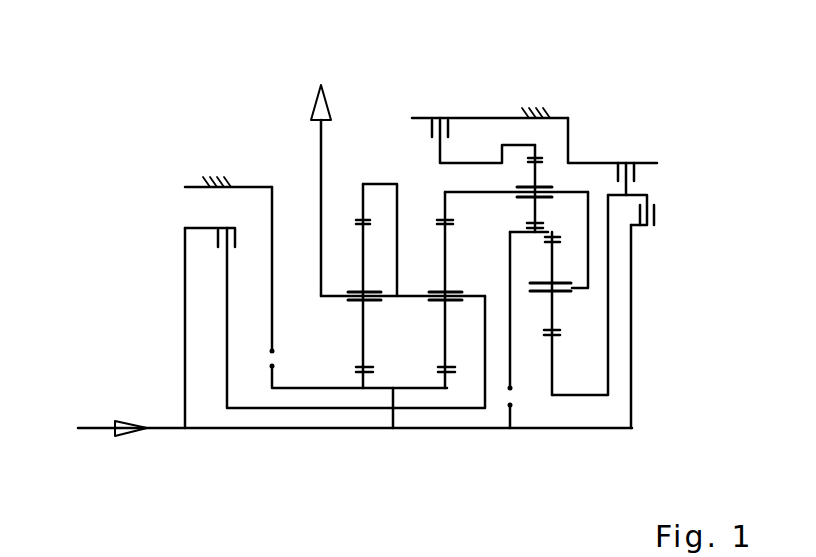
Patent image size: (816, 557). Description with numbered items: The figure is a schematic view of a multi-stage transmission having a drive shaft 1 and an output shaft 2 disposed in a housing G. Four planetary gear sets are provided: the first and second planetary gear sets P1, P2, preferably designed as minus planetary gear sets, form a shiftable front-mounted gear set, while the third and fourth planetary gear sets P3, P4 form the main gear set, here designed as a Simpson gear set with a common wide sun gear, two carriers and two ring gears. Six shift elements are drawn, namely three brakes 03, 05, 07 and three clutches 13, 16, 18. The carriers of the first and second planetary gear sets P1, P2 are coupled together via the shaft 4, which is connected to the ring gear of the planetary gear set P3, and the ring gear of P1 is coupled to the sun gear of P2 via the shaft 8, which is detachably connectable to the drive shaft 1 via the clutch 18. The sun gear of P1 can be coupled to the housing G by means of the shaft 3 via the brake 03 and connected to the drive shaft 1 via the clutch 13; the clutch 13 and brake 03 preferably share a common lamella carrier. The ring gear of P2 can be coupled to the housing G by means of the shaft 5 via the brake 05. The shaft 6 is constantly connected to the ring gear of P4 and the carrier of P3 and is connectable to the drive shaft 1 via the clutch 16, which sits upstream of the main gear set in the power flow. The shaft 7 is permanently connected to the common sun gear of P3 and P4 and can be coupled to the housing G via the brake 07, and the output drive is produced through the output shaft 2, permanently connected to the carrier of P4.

The drive shaft 1 is at (195, 431).
The output shaft 2 is at (320, 213).
The shaft 3 is at (573, 397).
The shaft 4 is at (577, 192).
The shaft 5 is at (522, 145).
The shaft 6 is at (377, 184).
The shaft 7 is at (393, 410).
The shaft 8 is at (545, 234).
The clutch 13 is at (656, 215).
The clutch 16 is at (226, 228).
The clutch 18 is at (508, 400).
The brake 03 is at (627, 162).
The brake 05 is at (440, 118).
The brake 07 is at (268, 360).
The housing G is at (220, 180).
The first planetary gear set P1 is at (557, 307).
The second planetary gear set P2 is at (543, 173).
The third planetary gear set P3 is at (436, 235).
The fourth planetary gear set P4 is at (357, 332).